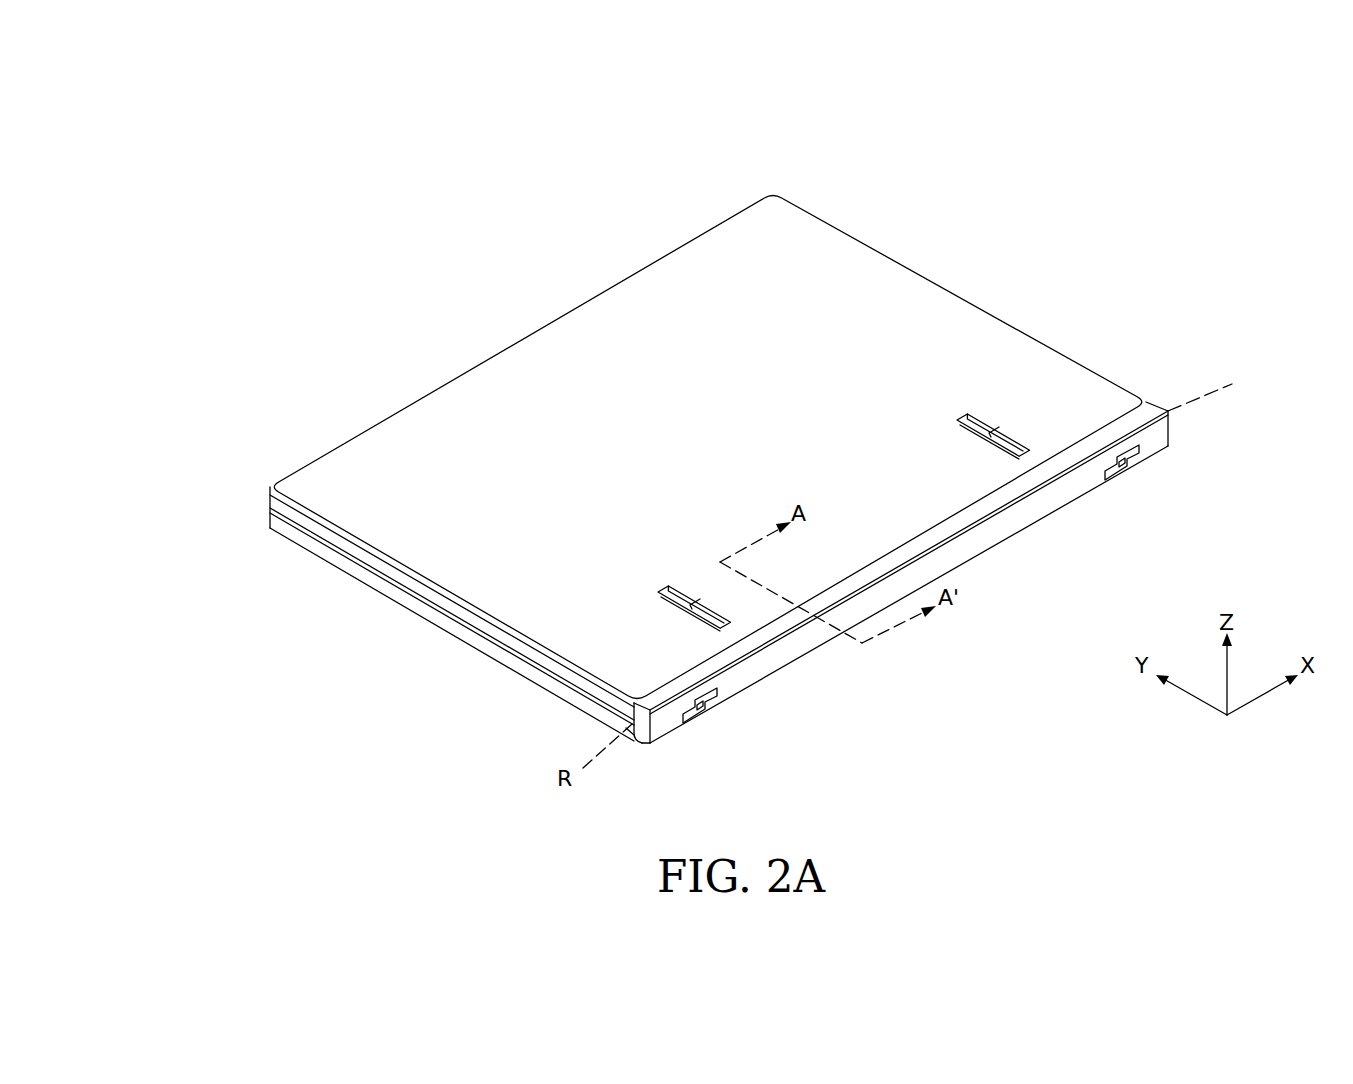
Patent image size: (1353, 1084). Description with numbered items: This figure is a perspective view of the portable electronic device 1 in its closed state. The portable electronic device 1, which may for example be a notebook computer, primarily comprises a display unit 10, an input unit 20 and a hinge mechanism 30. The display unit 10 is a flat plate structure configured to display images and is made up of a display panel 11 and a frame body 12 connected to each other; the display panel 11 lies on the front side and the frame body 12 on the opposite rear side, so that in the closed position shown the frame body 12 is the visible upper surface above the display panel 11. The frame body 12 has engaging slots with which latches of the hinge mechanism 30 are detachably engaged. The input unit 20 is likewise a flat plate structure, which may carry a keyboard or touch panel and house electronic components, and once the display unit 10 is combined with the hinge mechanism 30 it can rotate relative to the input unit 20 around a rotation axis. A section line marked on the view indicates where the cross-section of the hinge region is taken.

The portable electronic device 1 is at (148, 134).
The display unit 10 is at (192, 455).
The display panel 11 is at (271, 497).
The frame body 12 is at (267, 484).
The input unit 20 is at (392, 583).
The hinge mechanism 30 is at (655, 748).